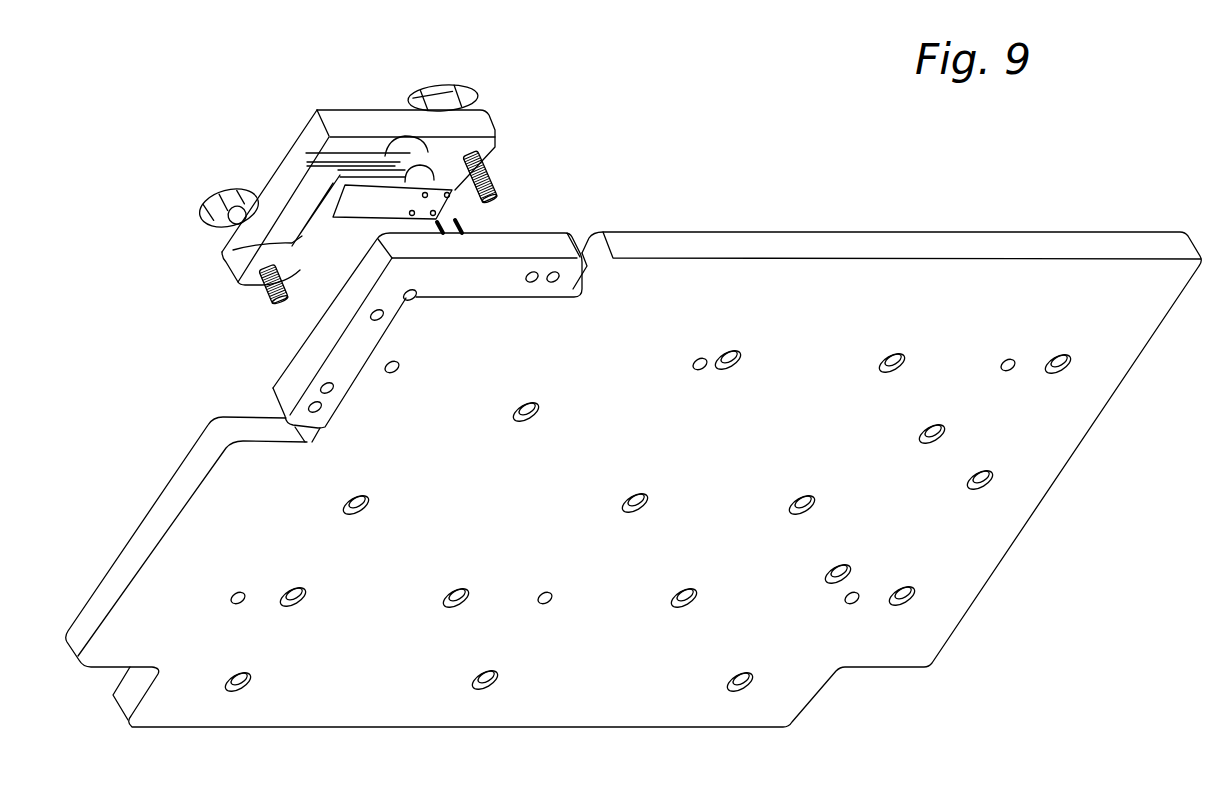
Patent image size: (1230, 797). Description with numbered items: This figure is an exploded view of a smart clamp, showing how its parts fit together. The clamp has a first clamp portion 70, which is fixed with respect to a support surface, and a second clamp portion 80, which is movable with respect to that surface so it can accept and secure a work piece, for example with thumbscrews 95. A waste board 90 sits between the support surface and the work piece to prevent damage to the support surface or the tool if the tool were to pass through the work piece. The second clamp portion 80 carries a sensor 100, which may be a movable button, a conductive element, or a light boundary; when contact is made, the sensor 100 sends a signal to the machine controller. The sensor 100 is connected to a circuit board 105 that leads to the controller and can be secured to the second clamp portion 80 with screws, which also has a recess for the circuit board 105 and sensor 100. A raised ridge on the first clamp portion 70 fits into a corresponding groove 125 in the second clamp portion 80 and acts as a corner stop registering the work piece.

The first clamp portion 70 is at (558, 233).
The second clamp portion 80 is at (331, 111).
The waste board 90 is at (668, 722).
The thumbscrews 95 is at (472, 85).
The sensor 100 is at (410, 166).
The circuit board 105 is at (366, 212).
The groove 125 is at (234, 265).